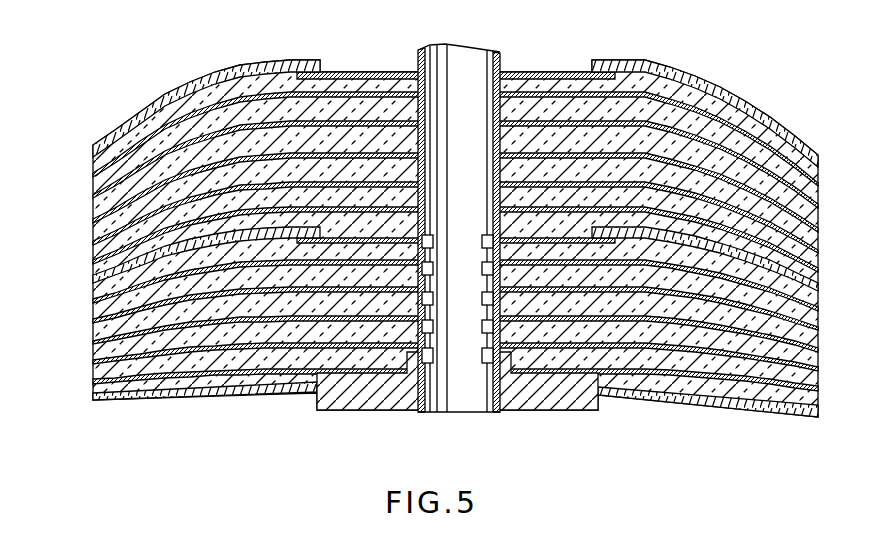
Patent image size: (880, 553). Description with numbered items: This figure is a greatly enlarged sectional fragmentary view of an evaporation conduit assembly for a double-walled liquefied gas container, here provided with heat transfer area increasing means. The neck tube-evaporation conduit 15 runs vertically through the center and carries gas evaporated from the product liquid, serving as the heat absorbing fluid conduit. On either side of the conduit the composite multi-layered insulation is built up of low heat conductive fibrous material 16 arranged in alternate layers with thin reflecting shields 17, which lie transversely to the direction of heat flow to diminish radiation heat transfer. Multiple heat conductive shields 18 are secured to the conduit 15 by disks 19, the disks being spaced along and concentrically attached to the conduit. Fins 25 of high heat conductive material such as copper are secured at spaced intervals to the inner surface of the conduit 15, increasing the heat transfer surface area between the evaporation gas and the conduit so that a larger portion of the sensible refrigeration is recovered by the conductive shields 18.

The neck tube evaporation conduit 15 is at (503, 63).
The low heat conductive fibrous material 16 is at (240, 327).
The reflecting shields 17 is at (713, 143).
The heat conductive shields 18 is at (279, 60).
The disks 19 is at (368, 72).
The fins 25 is at (482, 357).